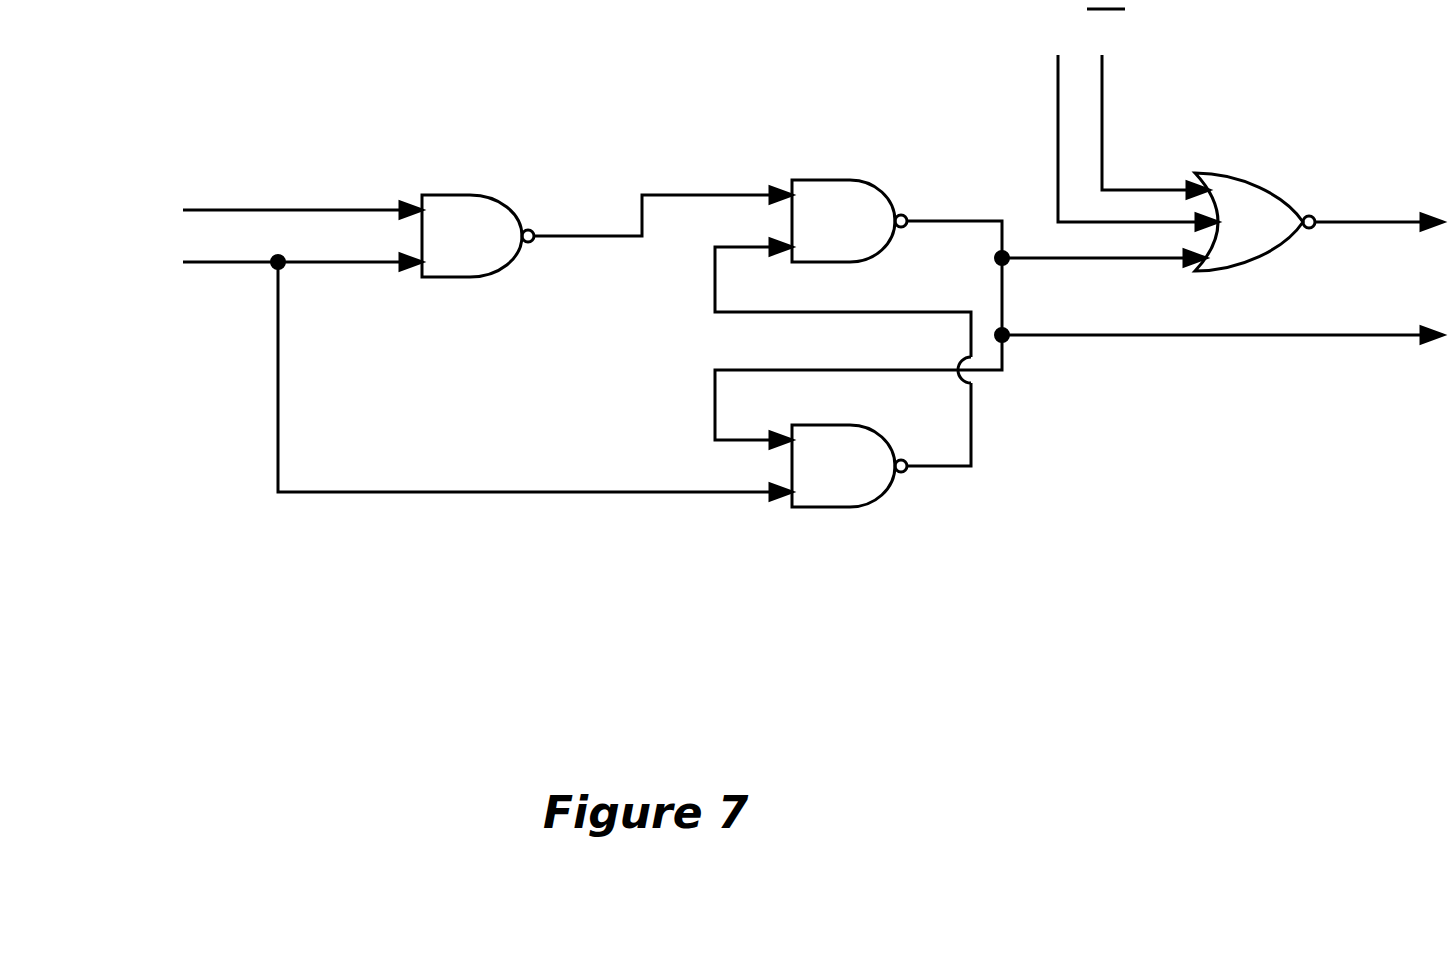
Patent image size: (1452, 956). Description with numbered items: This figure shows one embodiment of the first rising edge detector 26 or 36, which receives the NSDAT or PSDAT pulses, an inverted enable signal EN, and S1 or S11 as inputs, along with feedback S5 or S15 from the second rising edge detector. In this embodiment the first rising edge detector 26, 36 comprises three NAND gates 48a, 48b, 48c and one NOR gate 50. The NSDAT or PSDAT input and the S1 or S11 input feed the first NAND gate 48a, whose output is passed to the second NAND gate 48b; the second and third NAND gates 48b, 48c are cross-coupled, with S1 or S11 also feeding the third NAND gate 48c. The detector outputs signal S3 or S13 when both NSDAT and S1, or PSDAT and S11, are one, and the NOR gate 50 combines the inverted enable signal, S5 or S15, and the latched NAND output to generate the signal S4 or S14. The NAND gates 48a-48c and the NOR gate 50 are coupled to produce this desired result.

The first rising edge detector 26 is at (763, 325).
The first rising edge detector 36 is at (763, 325).
The NAND gate 48a is at (503, 275).
The NAND gate 48b is at (872, 262).
The NAND gate 48c is at (875, 505).
The NOR gate 50 is at (1243, 267).